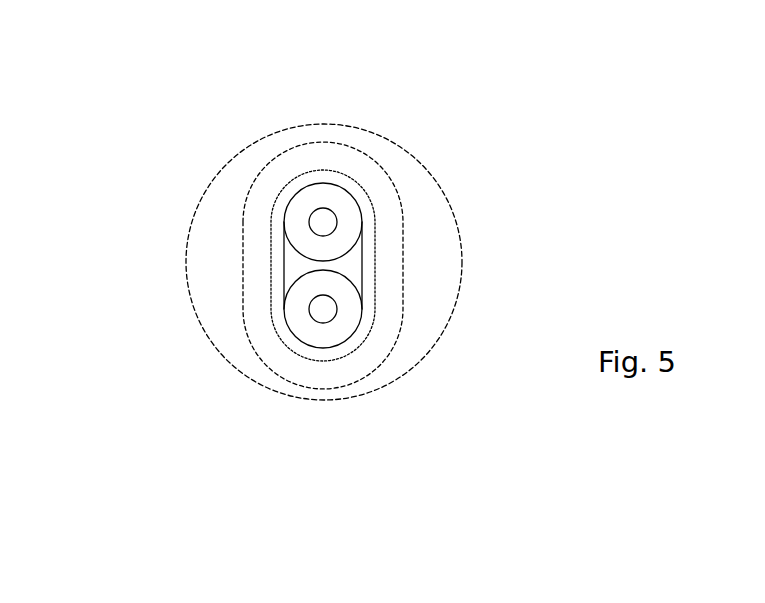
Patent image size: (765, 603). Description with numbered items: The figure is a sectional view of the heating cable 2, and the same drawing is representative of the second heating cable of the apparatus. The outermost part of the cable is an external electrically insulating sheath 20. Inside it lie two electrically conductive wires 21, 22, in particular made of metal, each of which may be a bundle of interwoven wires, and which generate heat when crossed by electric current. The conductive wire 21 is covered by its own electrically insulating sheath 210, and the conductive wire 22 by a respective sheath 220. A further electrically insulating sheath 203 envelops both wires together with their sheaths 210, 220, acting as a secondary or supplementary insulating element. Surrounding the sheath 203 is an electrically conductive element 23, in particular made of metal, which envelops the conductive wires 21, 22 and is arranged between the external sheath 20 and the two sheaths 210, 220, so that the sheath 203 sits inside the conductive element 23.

The heating cable 2 is at (496, 122).
The electrically insulating sheath 20 is at (183, 171).
The electrically conductive element 23 is at (327, 107).
The further electrically insulating sheath 203 is at (331, 402).
The electrically conductive wire 21 is at (277, 232).
The electrically conductive wire 22 is at (375, 301).
The electrically insulating sheath 210 is at (276, 285).
The electrically insulating sheath 220 is at (383, 357).